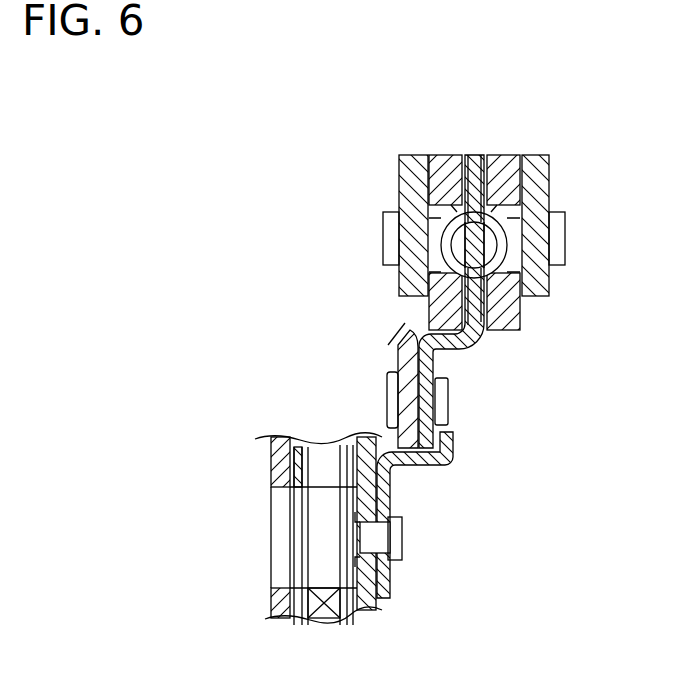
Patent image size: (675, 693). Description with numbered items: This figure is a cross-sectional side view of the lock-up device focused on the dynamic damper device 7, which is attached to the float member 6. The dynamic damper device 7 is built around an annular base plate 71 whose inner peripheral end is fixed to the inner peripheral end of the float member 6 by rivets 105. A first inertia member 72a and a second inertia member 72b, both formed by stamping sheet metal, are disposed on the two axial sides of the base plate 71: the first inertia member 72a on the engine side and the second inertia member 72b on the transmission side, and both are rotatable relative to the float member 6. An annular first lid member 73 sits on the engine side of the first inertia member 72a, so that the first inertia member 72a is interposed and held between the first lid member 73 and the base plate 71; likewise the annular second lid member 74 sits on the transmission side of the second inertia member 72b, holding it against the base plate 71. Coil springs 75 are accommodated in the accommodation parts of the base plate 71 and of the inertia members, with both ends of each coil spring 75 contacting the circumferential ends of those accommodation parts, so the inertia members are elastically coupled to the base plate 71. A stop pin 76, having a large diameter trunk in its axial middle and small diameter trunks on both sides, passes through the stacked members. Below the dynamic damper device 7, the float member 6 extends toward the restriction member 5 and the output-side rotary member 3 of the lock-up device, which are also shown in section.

The dynamic damper device 7 is at (462, 194).
The first lid member 73 is at (413, 155).
The first inertia member 72a is at (450, 155).
The second inertia member 72b is at (503, 155).
The second lid member 74 is at (537, 155).
The coil spring 75 is at (507, 243).
The stop pin 76 is at (383, 233).
The base plate 71 is at (437, 358).
The rivet 105 is at (448, 401).
The float member 6 is at (398, 358).
The restriction member 5 is at (449, 468).
The output-side rotary member 3 is at (268, 600).